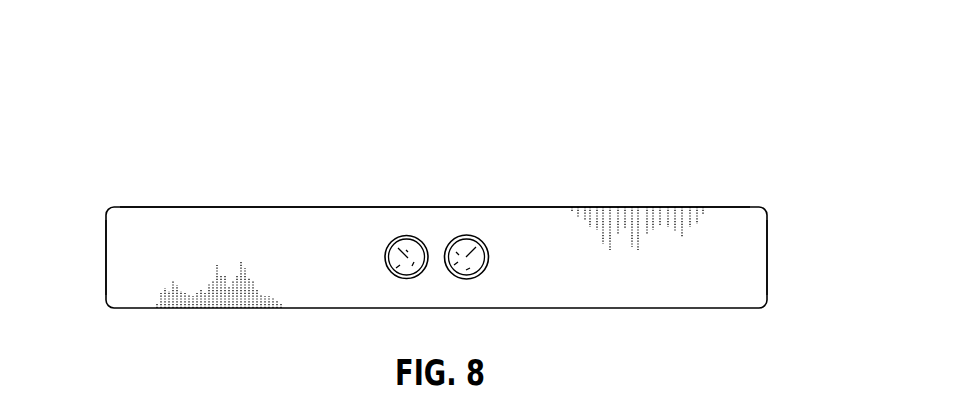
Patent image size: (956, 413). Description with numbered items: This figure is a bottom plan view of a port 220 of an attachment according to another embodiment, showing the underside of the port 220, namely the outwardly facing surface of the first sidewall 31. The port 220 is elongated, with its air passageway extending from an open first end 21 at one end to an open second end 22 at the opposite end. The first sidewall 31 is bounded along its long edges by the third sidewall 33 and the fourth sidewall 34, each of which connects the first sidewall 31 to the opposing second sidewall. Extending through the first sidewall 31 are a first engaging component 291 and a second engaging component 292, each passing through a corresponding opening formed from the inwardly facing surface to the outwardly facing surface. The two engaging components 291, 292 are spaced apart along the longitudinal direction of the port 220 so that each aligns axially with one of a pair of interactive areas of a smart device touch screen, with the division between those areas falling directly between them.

The port 220 is at (176, 94).
The open first end 21 is at (106, 240).
The open second end 22 is at (767, 250).
The first sidewall 31 is at (203, 225).
The third sidewall 33 is at (278, 309).
The fourth sidewall 34 is at (278, 207).
The first engaging component 291 is at (405, 250).
The second engaging component 292 is at (466, 254).